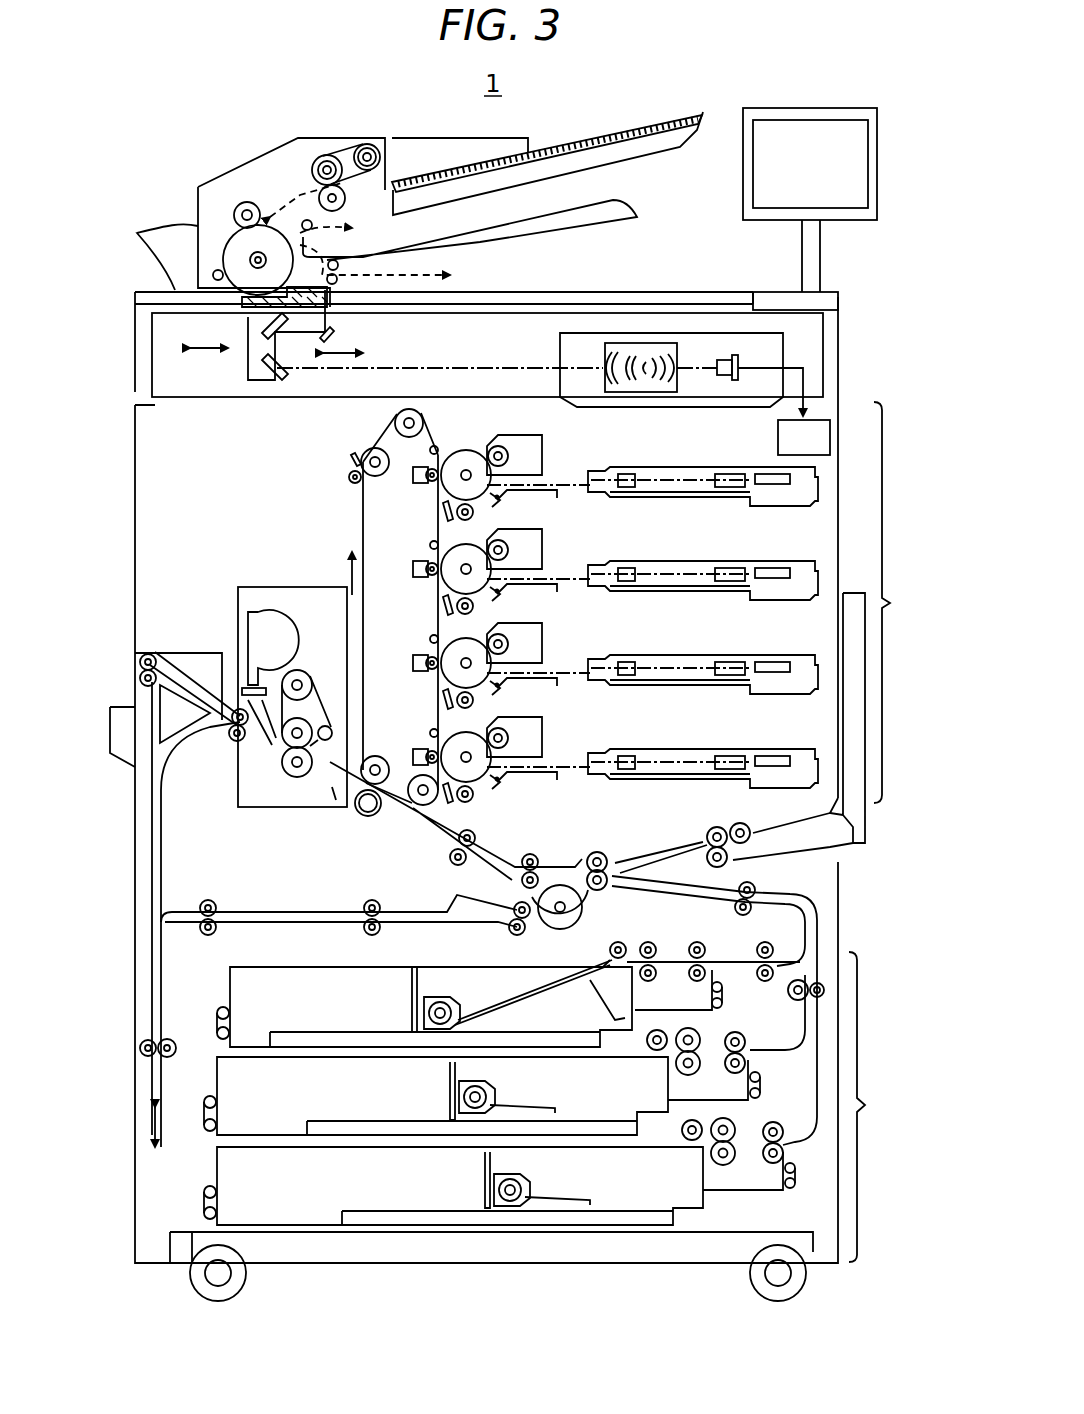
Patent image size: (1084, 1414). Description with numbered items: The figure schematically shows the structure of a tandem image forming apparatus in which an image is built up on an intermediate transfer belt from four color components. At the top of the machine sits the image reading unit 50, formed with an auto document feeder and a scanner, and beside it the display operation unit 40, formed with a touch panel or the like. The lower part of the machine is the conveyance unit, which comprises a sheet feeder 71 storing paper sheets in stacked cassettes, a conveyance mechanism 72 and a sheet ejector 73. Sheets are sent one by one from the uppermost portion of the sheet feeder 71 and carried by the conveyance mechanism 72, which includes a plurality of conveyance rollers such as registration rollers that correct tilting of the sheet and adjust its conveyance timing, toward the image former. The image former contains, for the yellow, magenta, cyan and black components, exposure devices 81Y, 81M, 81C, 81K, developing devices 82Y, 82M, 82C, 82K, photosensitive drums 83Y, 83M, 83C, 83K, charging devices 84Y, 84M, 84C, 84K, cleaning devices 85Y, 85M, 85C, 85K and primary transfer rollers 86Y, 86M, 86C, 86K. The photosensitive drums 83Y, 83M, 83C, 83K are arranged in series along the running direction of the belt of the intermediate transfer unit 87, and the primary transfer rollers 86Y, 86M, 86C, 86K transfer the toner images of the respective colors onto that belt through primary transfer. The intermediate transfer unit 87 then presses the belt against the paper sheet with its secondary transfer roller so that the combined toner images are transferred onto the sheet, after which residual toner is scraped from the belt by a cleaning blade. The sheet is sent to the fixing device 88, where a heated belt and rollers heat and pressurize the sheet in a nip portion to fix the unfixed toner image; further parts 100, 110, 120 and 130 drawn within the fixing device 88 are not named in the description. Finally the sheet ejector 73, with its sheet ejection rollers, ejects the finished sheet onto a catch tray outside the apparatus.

The display operation unit 40 is at (843, 108).
The image reading unit 50 is at (198, 240).
The sheet feeder 71 is at (534, 1126).
The conveyance mechanism 72 is at (810, 910).
The sheet ejector 73 is at (138, 664).
The exposure device 81Y is at (705, 466).
The exposure device 81M is at (705, 560).
The exposure device 81C is at (705, 654).
The exposure device 81K is at (705, 748).
The developing device 82Y is at (544, 452).
The developing device 82M is at (544, 546).
The developing device 82C is at (544, 640).
The developing device 82K is at (544, 735).
The photosensitive drum 83Y is at (465, 452).
The photosensitive drum 83M is at (455, 548).
The photosensitive drum 83C is at (455, 642).
The photosensitive drum 83K is at (455, 736).
The charging device 84Y is at (505, 512).
The charging device 84M is at (505, 606).
The charging device 84C is at (505, 700).
The charging device 84K is at (505, 794).
The cleaning device 85Y is at (440, 512).
The cleaning device 85M is at (440, 606).
The cleaning device 85C is at (440, 700).
The cleaning device 85K is at (452, 802).
The primary transfer roller 86Y is at (420, 483).
The primary transfer roller 86M is at (420, 577).
The primary transfer roller 86C is at (420, 671).
The primary transfer roller 86K is at (422, 762).
The intermediate transfer unit 87 is at (382, 440).
The fixing device 88 is at (252, 587).
The heating unit 100 is at (293, 668).
The fixing roller 110 is at (290, 740).
The fixing belt 120 is at (318, 715).
The pressure roller 130 is at (297, 778).